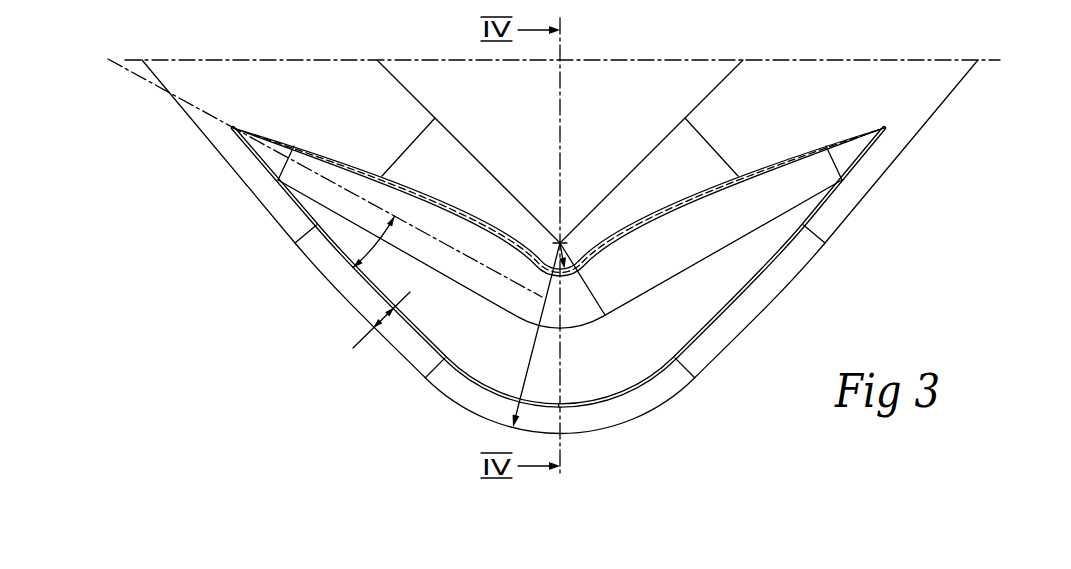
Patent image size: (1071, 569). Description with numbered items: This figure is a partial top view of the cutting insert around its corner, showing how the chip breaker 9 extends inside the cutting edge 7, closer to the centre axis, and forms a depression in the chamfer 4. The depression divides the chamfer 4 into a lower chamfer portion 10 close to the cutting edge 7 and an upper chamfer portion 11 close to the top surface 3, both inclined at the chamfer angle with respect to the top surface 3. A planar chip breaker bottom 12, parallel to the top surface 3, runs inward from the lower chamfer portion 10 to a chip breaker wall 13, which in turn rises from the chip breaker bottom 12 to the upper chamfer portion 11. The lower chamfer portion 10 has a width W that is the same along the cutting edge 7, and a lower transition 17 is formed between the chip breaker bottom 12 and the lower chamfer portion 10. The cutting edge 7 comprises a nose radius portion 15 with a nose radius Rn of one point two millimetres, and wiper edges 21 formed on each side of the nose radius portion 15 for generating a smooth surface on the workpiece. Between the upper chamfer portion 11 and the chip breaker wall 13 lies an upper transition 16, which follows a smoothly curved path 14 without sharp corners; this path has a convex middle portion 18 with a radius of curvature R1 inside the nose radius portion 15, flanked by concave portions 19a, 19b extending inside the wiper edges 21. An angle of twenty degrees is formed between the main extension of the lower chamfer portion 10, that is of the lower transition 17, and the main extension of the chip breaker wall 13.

The top surface 3 is at (600, 106).
The chamfer 4 is at (829, 111).
The cutting edge 7 is at (717, 365).
The chip breaker 9 is at (348, 232).
The lower chamfer portion 10 is at (748, 313).
The upper chamfer portion 11 is at (630, 198).
The chip breaker bottom 12 is at (637, 345).
The chip breaker wall 13 is at (443, 257).
The smoothly curved path 14 is at (722, 185).
The nose radius portion 15 is at (608, 428).
The upper transition 16 is at (653, 228).
The lower transition 17 is at (712, 327).
The convex middle portion 18 is at (572, 275).
The concave portion 19a is at (458, 217).
The concave portion 19b is at (658, 206).
The wiper edges 21 is at (387, 345).
The radius of curvature of the convex middle portion R1 is at (567, 258).
The nose radius Rn is at (523, 383).
The width of the lower chamfer portion W is at (382, 319).